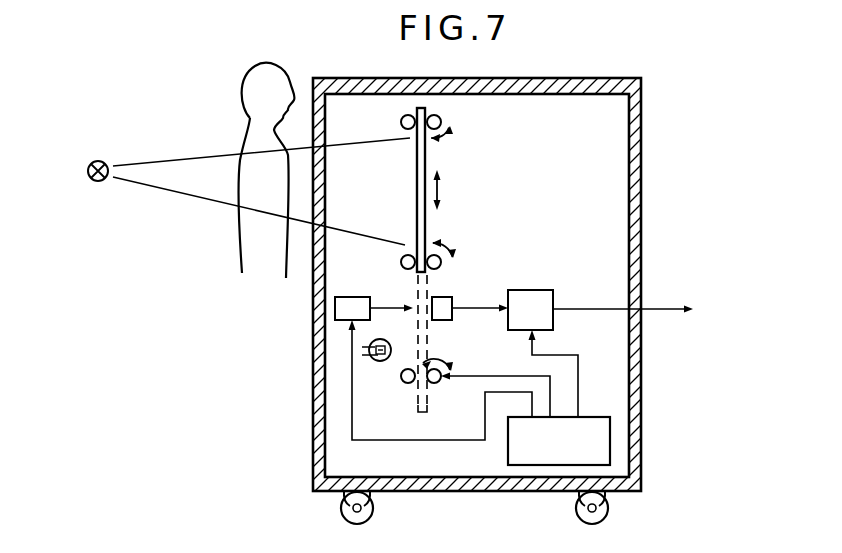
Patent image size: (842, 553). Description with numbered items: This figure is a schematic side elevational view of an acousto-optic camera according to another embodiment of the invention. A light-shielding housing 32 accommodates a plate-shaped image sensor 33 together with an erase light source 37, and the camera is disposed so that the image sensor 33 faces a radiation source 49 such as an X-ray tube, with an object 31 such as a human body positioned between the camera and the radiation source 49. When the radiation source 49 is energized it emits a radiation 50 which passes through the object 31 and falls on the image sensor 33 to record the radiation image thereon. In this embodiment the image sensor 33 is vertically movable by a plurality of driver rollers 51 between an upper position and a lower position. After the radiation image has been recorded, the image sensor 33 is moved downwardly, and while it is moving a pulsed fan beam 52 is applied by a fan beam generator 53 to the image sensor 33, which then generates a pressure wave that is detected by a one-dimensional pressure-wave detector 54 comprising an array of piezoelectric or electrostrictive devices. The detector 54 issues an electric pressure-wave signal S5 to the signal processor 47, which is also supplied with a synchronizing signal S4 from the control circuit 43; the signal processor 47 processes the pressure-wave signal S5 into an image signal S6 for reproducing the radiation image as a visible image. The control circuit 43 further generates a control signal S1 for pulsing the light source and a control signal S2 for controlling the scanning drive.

The object 31 is at (243, 206).
The light-shielding housing 32 is at (313, 331).
The image sensor 33 is at (417, 178).
The erase light source 37 is at (391, 357).
The control circuit 43 is at (542, 456).
The signal processor 47 is at (541, 290).
The radiation source 49 is at (101, 182).
The radiation 50 is at (178, 158).
The driver rollers 51 is at (442, 119).
The pulsed fan beam 52 is at (381, 306).
The fan beam generator 53 is at (343, 296).
The one-dimensional pressure-wave detector 54 is at (452, 302).
The control signal S1 is at (388, 441).
The control signal S2 is at (470, 373).
The synchronizing signal S4 is at (568, 356).
The electric pressure-wave signal S5 is at (476, 309).
The electric image signal S6 is at (663, 308).